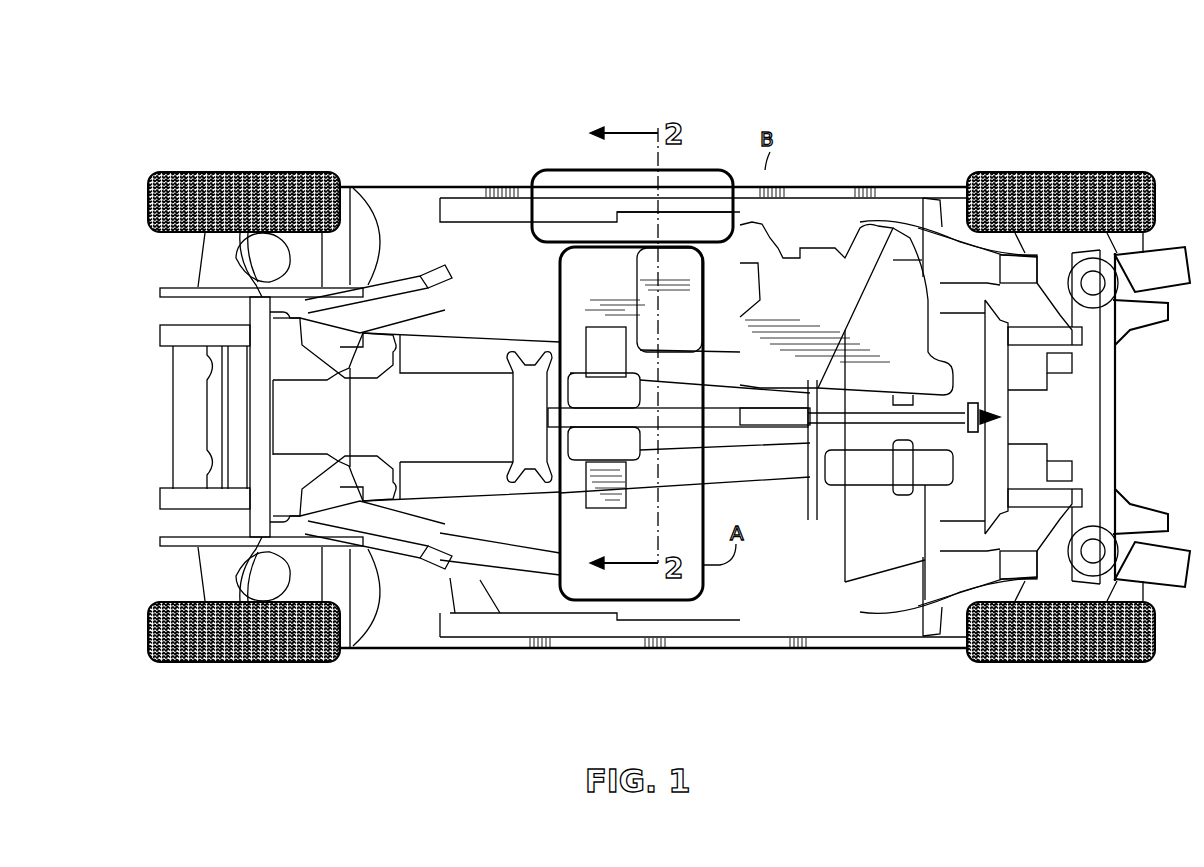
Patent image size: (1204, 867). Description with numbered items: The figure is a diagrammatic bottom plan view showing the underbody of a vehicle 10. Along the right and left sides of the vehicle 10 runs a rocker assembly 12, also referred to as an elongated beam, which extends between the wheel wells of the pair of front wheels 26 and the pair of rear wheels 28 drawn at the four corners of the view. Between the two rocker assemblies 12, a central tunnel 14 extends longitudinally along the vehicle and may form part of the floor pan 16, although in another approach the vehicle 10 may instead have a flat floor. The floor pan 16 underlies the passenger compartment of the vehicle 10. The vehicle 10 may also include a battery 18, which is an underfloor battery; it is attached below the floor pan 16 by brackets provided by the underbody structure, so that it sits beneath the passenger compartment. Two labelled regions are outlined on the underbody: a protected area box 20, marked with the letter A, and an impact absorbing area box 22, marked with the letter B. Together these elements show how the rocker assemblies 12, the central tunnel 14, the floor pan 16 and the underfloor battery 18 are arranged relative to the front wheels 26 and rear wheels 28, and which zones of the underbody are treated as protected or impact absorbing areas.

The vehicle 10 is at (855, 98).
The rocker assembly 12 is at (822, 176).
The central tunnel 14 is at (750, 440).
The floor pan 16 is at (615, 284).
The battery 18 is at (905, 305).
The protected area box 20 is at (585, 530).
The impact absorbing area box 22 is at (565, 172).
The front wheels 26 is at (248, 663).
The rear wheels 28 is at (1062, 663).